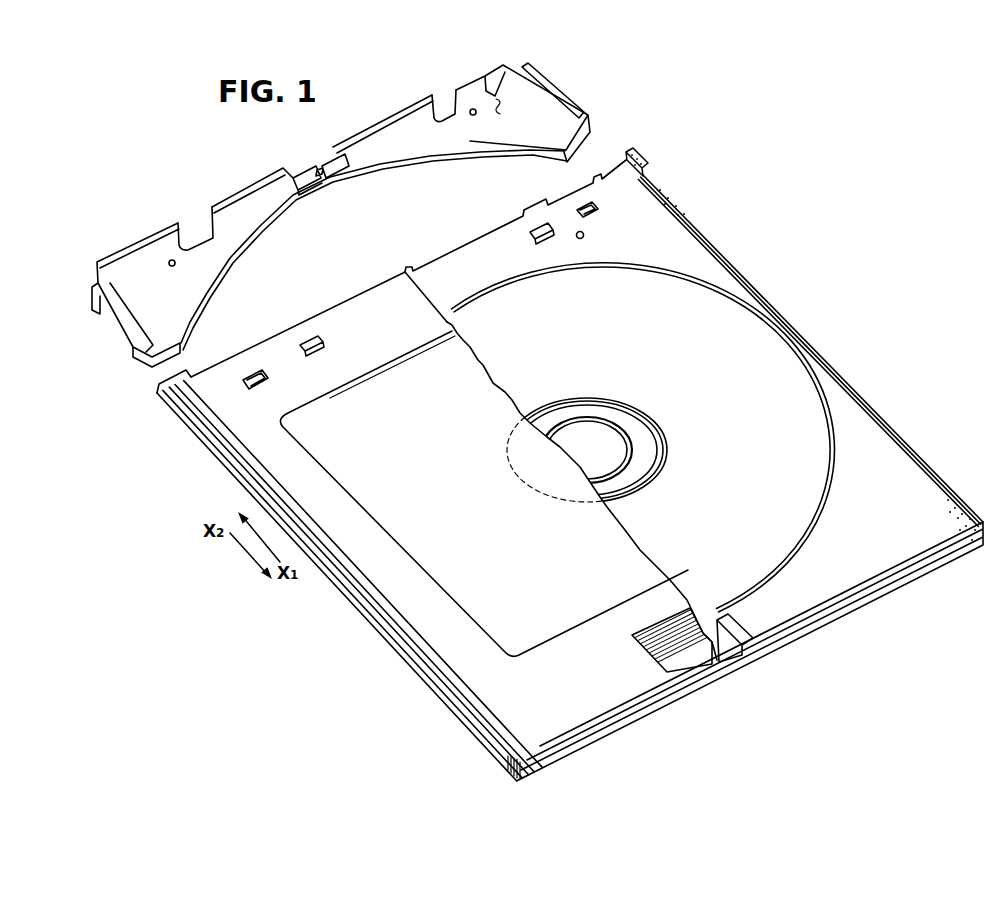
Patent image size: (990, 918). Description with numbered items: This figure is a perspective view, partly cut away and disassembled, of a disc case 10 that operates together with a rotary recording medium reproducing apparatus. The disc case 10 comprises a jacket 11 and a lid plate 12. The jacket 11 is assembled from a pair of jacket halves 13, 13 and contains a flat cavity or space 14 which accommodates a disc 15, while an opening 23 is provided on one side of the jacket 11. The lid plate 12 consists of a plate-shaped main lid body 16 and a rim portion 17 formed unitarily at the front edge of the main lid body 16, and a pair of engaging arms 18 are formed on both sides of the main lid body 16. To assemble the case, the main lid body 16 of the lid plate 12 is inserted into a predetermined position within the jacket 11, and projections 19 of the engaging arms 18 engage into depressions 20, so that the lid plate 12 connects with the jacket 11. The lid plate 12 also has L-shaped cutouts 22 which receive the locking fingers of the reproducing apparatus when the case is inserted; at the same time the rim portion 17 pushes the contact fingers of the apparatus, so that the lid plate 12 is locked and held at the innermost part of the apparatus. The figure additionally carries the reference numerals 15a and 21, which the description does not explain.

The disc case 10 is at (686, 168).
The jacket 11 is at (358, 623).
The lid plate 12 is at (232, 188).
The jacket halves 13 is at (880, 595).
The flat cavity or space 14 is at (890, 456).
The disc 15 is at (808, 490).
The disc periphery 15a is at (807, 537).
The main lid body 16 is at (415, 150).
The rim portion 17 is at (356, 136).
The engaging arms 18 is at (571, 100).
The projections 19 is at (541, 66).
The depressions 20 is at (645, 176).
The tab 21 is at (540, 237).
The L-shaped cutouts 22 is at (421, 118).
The opening 23 is at (411, 272).